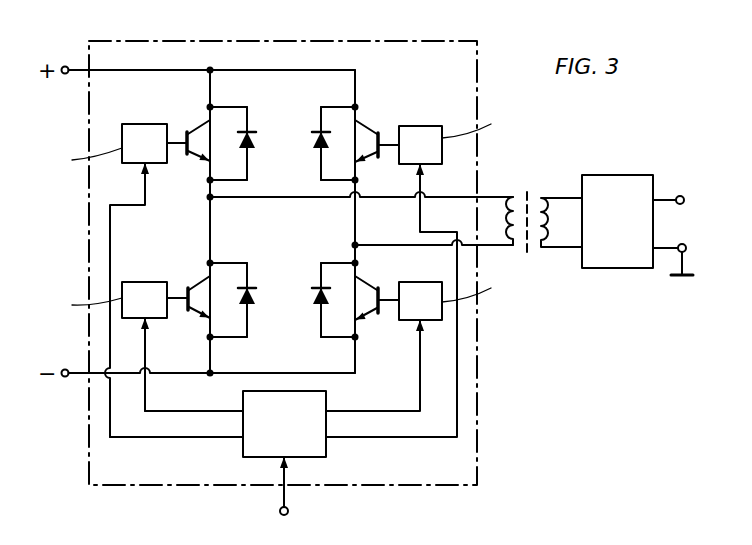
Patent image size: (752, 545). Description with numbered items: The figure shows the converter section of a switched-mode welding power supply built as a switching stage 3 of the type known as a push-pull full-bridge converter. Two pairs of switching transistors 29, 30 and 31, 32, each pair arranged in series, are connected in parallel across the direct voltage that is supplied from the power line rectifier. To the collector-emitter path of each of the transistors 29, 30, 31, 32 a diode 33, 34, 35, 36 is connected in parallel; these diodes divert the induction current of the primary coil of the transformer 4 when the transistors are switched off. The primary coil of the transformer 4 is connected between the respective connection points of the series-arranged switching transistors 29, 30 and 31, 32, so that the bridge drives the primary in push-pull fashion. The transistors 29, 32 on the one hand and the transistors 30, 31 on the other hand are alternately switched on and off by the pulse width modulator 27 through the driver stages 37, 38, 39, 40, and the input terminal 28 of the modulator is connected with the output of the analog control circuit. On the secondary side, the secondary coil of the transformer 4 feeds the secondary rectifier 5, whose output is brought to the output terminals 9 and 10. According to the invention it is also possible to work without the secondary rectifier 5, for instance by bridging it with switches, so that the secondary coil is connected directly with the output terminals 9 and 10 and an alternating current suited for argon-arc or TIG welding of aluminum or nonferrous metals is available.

The switching stage 3 is at (343, 41).
The transformer 4 is at (531, 186).
The secondary rectifier 5 is at (611, 197).
The output terminal 9 is at (684, 197).
The output terminal 10 is at (686, 249).
The pulse width modulator 27 is at (276, 438).
The input terminal 28 is at (288, 514).
The switching transistor 29 is at (188, 132).
The switching transistor 30 is at (188, 287).
The switching transistor 31 is at (365, 130).
The switching transistor 32 is at (367, 287).
The diode 33 is at (248, 132).
The diode 34 is at (244, 288).
The diode 35 is at (319, 132).
The diode 36 is at (319, 289).
The driver stage 37 is at (140, 135).
The driver stage 38 is at (147, 292).
The driver stage 39 is at (418, 135).
The driver stage 40 is at (420, 296).